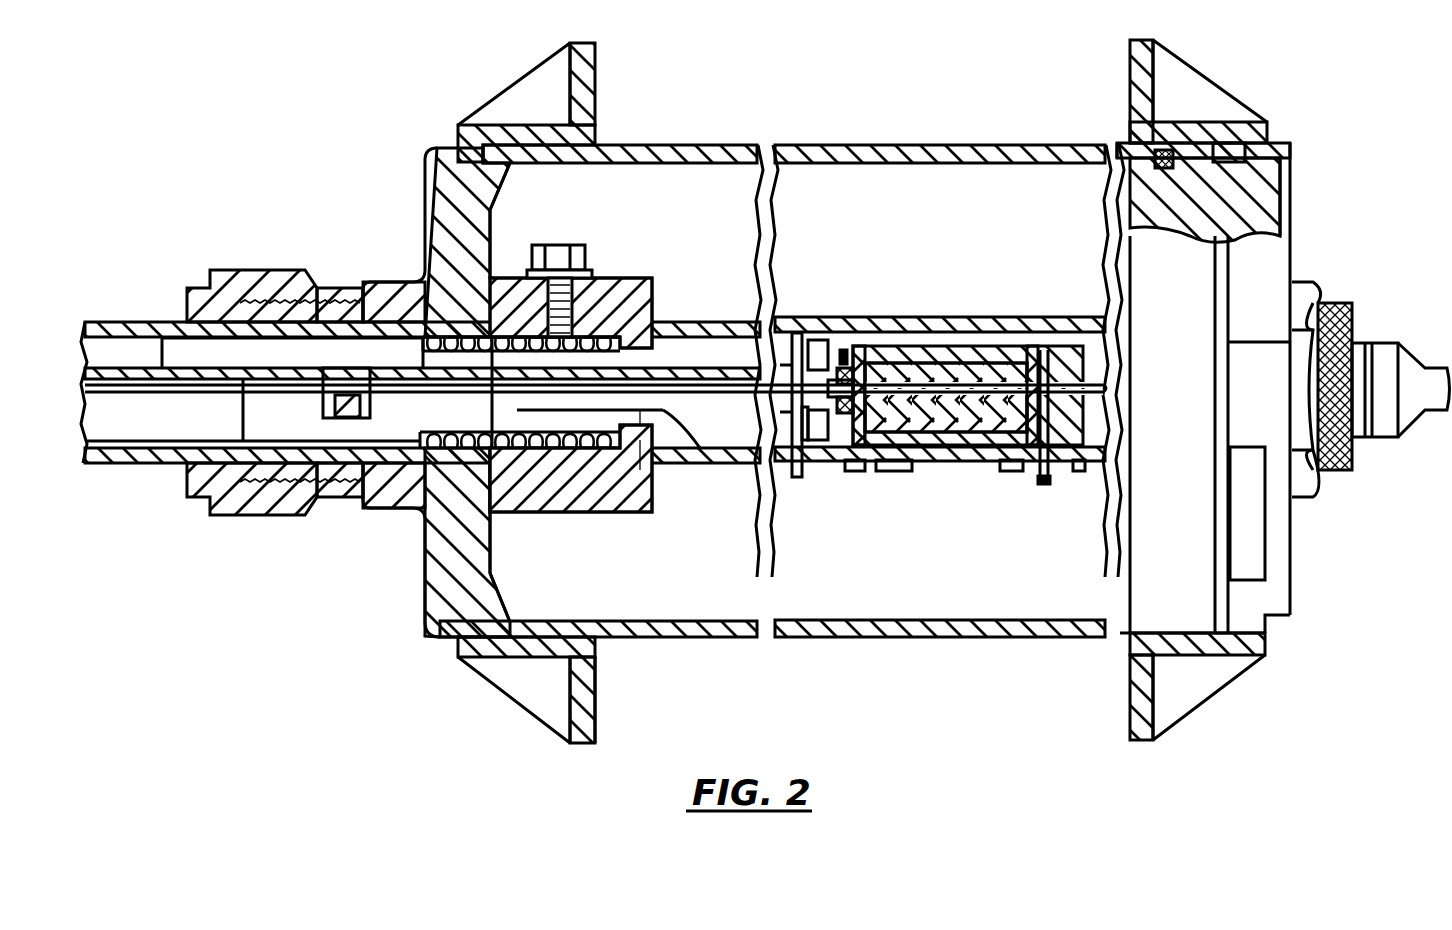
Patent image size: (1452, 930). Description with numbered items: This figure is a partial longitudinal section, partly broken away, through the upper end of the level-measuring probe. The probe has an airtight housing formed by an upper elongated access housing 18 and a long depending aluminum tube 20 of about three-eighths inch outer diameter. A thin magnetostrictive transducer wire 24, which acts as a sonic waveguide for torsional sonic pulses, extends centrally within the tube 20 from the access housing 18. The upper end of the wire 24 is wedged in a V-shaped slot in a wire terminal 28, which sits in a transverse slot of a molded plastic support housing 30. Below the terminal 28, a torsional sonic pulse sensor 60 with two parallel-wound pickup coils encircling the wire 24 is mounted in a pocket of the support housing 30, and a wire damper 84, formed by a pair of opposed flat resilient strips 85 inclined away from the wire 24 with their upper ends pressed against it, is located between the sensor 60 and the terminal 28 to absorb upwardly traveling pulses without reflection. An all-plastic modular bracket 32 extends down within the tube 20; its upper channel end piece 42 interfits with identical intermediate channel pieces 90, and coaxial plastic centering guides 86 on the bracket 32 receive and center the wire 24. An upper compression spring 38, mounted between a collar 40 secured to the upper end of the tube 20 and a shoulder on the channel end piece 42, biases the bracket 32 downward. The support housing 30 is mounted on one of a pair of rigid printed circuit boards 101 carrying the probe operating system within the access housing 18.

The upper elongated access housing 18 is at (910, 637).
The aluminum tube 20 is at (112, 458).
The magnetostrictive transducer wire 24 is at (120, 392).
The wire terminal 28 is at (1046, 484).
The support housing 30 is at (1018, 350).
The modular bracket 32 is at (663, 404).
The upper compression spring 38 is at (650, 300).
The collar 40 is at (552, 500).
The channel end piece 42 is at (528, 432).
The torsional sonic pulse sensor 60 is at (842, 356).
The wire damper 84 is at (955, 445).
The resilient strips 85 is at (935, 372).
The centering guide 86 is at (345, 382).
The intermediate channel piece 90 is at (127, 366).
The printed circuit boards 101 is at (800, 333).